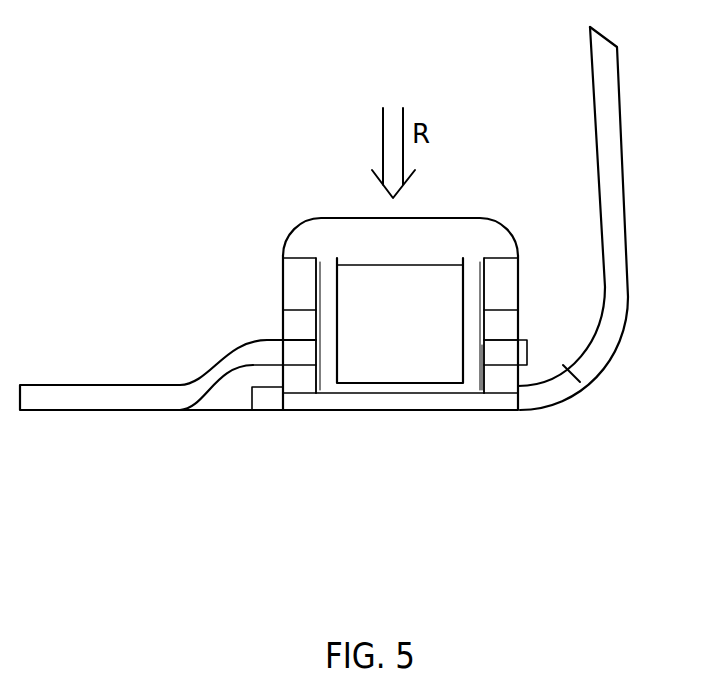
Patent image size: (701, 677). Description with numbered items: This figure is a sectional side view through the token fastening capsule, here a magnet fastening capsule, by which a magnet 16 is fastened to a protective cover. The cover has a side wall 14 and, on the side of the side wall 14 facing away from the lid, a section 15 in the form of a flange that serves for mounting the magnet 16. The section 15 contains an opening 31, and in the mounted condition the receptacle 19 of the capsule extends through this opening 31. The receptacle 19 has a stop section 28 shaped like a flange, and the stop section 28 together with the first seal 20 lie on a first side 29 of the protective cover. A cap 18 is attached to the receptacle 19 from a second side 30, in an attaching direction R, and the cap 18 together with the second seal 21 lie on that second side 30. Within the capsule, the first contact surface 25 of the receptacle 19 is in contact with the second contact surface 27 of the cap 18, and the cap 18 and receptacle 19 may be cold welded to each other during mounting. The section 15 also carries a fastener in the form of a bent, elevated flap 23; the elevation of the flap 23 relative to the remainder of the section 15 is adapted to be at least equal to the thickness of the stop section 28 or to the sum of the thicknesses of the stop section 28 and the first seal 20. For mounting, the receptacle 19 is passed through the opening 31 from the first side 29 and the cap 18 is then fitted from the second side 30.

The side wall 14 is at (612, 313).
The section for mounting a token 15 is at (52, 400).
The magnet 16 is at (378, 370).
The cap 18 is at (293, 248).
The receptacle 19 is at (463, 400).
The first seal 20 is at (505, 327).
The second seal 21 is at (510, 378).
The flap 23 is at (270, 353).
The first contact surface 25 is at (321, 288).
The second contact surface 27 is at (487, 288).
The stop section 28 is at (300, 403).
The first side 29 is at (180, 411).
The second side 30 is at (233, 344).
The opening 31 is at (483, 352).